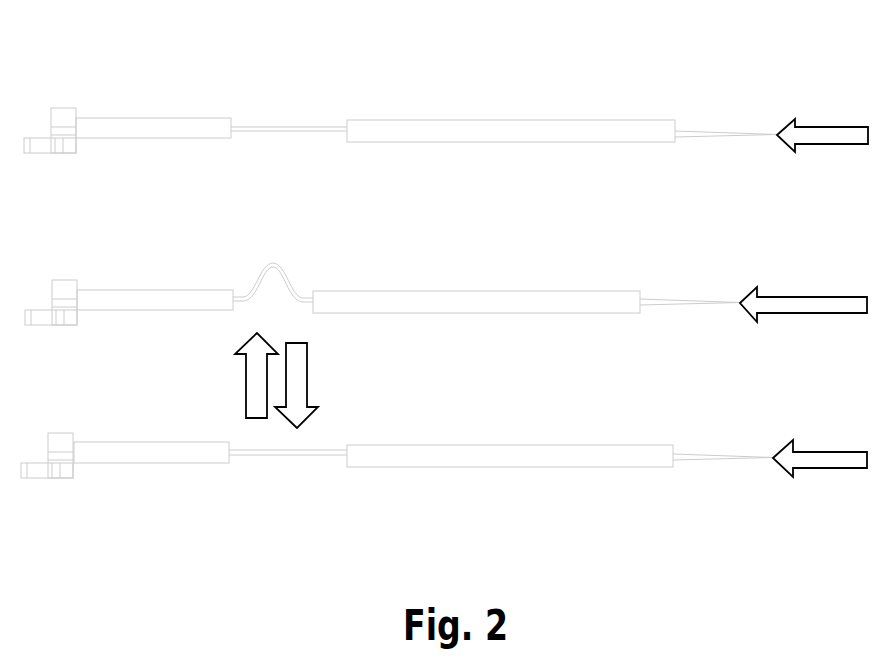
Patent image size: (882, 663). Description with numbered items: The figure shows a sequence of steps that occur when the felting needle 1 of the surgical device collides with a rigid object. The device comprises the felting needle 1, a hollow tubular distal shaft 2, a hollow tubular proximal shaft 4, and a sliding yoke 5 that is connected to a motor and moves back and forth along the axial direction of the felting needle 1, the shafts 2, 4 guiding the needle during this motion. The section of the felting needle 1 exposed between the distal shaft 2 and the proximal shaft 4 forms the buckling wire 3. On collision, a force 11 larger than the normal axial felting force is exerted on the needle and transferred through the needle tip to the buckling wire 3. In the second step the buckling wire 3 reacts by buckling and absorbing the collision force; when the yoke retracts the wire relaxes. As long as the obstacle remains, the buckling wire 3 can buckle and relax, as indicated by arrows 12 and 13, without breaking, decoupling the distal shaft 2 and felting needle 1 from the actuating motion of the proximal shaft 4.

The felting needle 1 is at (705, 134).
The distal shaft 2 is at (500, 134).
The buckling wire 3 is at (283, 128).
The proximal shaft 4 is at (190, 126).
The sliding yoke 5 is at (72, 108).
The force 11 is at (833, 132).
The arrow 12 is at (307, 368).
The arrow 13 is at (246, 392).